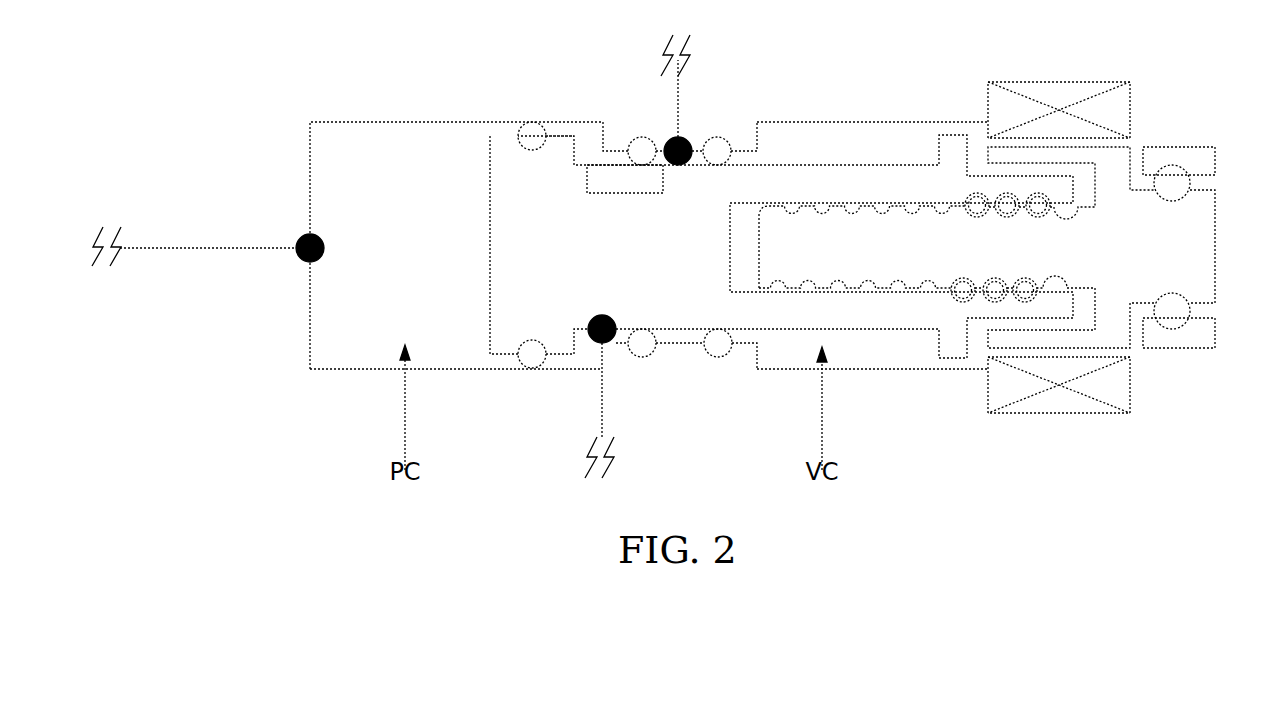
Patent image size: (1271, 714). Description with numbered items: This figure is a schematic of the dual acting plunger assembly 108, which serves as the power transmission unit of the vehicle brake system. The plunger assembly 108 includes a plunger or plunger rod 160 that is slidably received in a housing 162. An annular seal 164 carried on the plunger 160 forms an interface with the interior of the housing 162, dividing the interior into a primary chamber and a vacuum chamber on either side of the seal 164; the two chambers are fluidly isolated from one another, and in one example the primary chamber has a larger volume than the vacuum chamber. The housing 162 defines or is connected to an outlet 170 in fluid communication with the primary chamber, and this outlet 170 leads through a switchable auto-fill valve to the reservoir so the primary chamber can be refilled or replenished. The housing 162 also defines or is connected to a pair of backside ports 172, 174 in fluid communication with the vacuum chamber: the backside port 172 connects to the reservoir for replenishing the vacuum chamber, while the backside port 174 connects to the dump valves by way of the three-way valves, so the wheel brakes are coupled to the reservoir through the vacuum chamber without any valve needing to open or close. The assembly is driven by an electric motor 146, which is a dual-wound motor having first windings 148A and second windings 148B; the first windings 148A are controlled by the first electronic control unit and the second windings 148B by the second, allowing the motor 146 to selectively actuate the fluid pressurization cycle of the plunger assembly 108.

The dual acting plunger assembly 108 is at (300, 70).
The electric motor 146 is at (1177, 355).
The first windings 148A is at (1055, 82).
The second windings 148B is at (1058, 414).
The plunger rod 160 is at (615, 268).
The housing 162 is at (415, 121).
The annular seal 164 is at (532, 133).
The outlet 170 is at (300, 238).
The backside port 172 is at (690, 140).
The backside port 174 is at (612, 339).